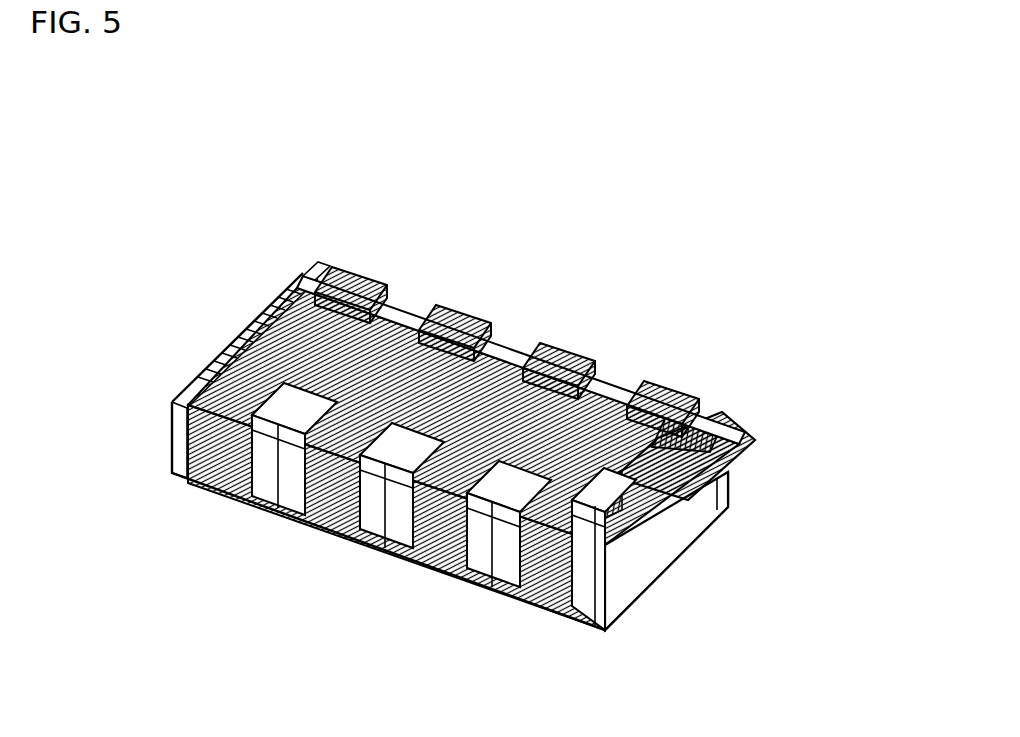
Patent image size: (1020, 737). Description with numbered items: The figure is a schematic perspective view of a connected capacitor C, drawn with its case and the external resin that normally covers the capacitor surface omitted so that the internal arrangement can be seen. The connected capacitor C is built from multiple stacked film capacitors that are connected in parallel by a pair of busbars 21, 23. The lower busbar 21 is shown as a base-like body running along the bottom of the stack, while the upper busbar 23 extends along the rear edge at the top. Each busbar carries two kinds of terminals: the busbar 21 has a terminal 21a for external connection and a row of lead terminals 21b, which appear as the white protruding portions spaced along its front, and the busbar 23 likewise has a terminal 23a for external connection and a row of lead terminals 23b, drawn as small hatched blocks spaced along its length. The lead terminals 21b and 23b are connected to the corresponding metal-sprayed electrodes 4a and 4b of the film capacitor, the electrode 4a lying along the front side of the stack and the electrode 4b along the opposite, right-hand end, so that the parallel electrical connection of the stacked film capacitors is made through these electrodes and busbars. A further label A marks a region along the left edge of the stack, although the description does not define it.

The busbar 21 is at (486, 474).
The terminal 21a is at (697, 500).
The lead terminal 21b is at (572, 606).
The busbar 23 is at (521, 292).
The terminal 23a is at (730, 425).
The lead terminal 23b is at (647, 390).
The metal-sprayed electrode 4a is at (290, 520).
The metal-sprayed electrode 4b is at (727, 492).
The region A is at (245, 320).
The connected capacitor C is at (747, 95).